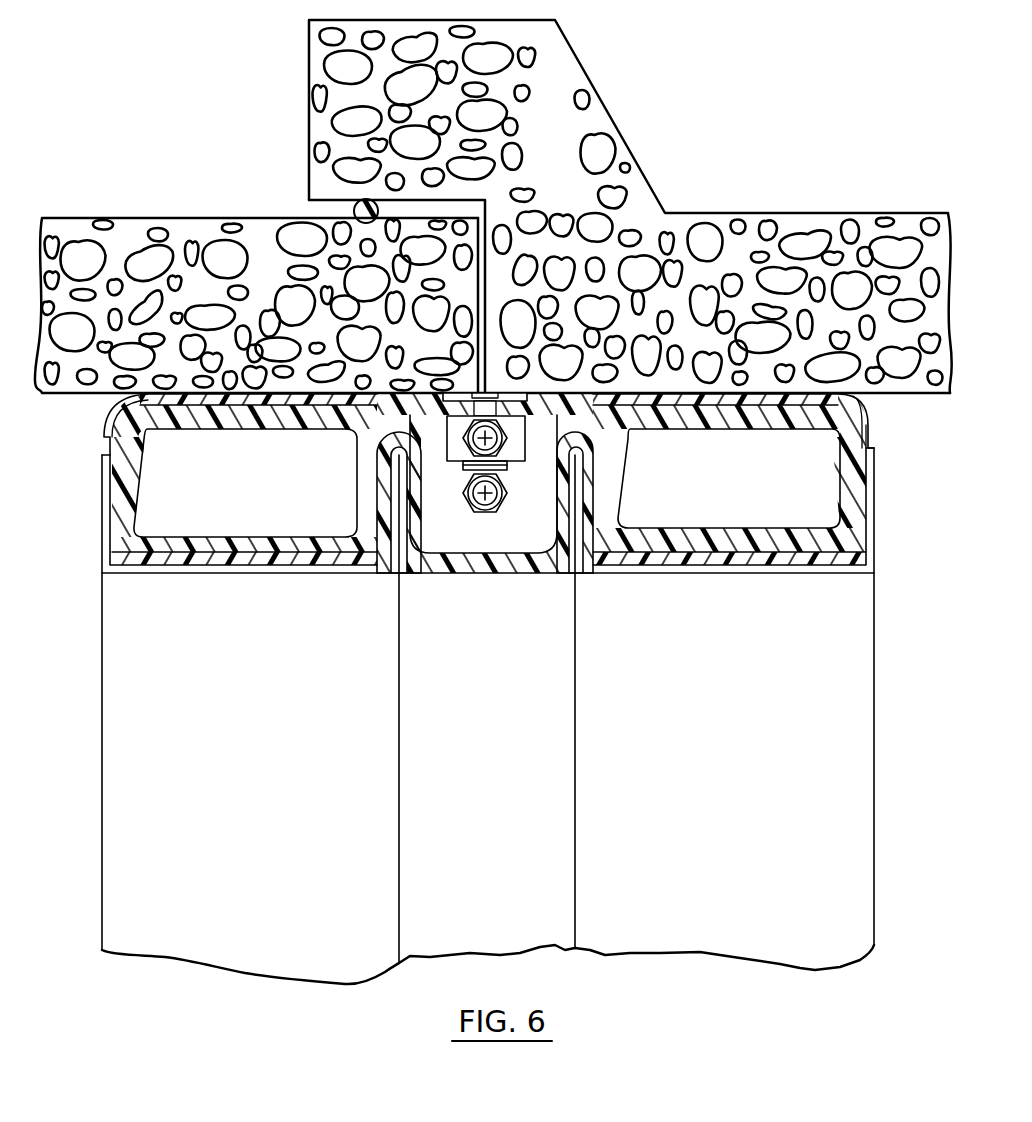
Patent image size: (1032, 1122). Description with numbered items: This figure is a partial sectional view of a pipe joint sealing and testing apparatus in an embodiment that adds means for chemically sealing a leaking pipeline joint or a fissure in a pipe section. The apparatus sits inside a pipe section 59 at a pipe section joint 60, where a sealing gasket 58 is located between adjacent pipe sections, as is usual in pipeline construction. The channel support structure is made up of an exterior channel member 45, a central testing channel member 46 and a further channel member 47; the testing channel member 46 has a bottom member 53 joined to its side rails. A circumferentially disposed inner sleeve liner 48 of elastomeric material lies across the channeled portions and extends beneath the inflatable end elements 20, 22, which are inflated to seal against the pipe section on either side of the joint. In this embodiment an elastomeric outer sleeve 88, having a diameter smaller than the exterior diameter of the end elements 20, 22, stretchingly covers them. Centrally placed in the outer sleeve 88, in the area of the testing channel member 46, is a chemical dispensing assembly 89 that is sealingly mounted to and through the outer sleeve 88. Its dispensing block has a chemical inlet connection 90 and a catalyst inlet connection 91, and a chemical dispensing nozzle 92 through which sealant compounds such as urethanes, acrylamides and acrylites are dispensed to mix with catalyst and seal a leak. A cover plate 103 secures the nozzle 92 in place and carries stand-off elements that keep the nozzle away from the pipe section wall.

The inflatable end element 20 is at (135, 494).
The inflatable end element 22 is at (618, 438).
The exterior channel member 45 is at (224, 898).
The central testing channel member 46 is at (478, 896).
The channel member 47 is at (728, 896).
The inner sleeve liner 48 is at (480, 560).
The bottom member 53 is at (545, 578).
The sealing gasket 58 is at (352, 203).
The pipe section 59 is at (626, 191).
The pipe section joint 60 is at (462, 207).
The outer sleeve 88 is at (870, 411).
The chemical dispensing assembly 89 is at (445, 430).
The chemical inlet connection 90 is at (503, 450).
The catalyst inlet connection 91 is at (470, 507).
The chemical dispensing nozzle 92 is at (545, 397).
The cover plate 103 is at (467, 397).